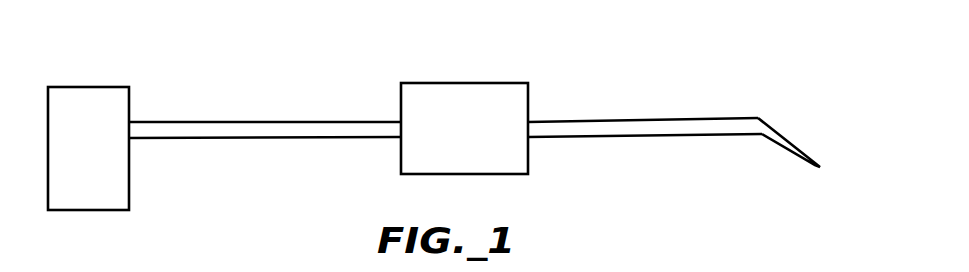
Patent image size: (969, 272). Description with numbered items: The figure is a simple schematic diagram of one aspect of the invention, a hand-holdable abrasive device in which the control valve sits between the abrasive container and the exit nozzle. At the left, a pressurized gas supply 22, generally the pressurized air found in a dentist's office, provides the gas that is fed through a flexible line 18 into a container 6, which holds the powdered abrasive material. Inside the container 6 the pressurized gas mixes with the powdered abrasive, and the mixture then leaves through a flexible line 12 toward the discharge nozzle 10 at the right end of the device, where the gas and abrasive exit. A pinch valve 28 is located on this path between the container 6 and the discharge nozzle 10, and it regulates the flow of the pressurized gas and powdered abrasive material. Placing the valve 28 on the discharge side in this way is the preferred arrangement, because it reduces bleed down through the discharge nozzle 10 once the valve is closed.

The pressurized gas supply 22 is at (88, 87).
The flexible line 18 is at (230, 138).
The container 6 is at (460, 83).
The flexible line 12 is at (580, 137).
The discharge nozzle 10 is at (793, 140).
The pinch valve 28 is at (660, 115).